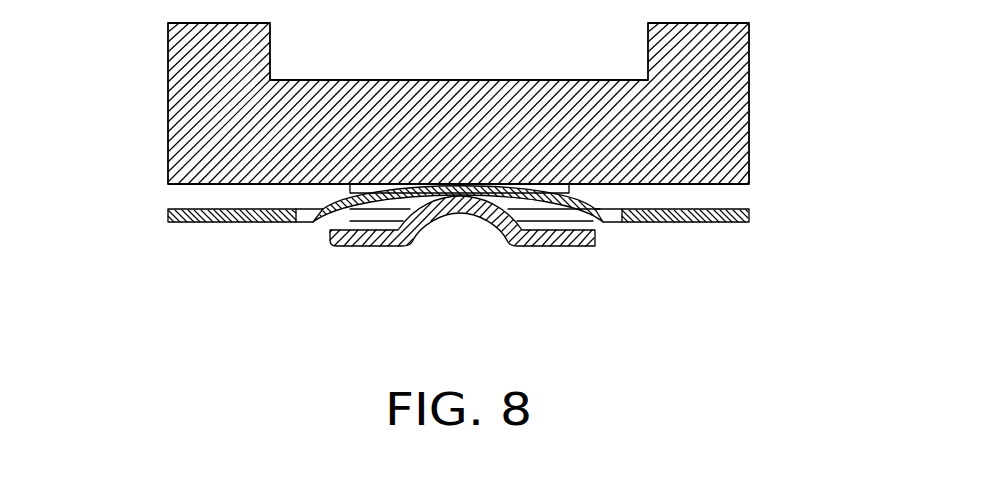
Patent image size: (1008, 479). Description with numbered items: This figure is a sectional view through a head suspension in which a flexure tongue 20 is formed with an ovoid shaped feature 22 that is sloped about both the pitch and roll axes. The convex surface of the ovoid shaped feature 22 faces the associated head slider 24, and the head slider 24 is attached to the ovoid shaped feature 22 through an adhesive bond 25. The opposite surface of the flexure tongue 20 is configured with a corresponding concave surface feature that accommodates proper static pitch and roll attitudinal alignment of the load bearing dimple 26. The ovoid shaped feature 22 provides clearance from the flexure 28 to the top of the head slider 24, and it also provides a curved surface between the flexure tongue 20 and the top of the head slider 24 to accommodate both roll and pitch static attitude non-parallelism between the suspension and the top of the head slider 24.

The flexure tongue 20 is at (598, 218).
The ovoid shaped feature 22 is at (363, 198).
The head slider 24 is at (193, 118).
The adhesive bond 25 is at (569, 194).
The load bearing dimple 26 is at (470, 214).
The flexure 28 is at (749, 211).